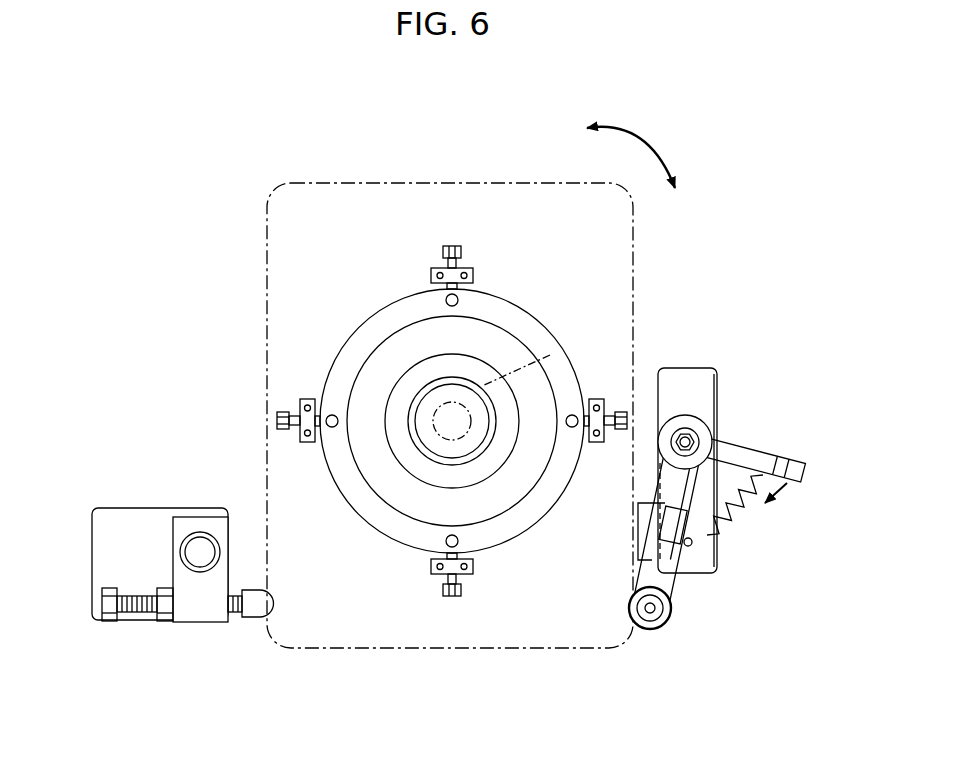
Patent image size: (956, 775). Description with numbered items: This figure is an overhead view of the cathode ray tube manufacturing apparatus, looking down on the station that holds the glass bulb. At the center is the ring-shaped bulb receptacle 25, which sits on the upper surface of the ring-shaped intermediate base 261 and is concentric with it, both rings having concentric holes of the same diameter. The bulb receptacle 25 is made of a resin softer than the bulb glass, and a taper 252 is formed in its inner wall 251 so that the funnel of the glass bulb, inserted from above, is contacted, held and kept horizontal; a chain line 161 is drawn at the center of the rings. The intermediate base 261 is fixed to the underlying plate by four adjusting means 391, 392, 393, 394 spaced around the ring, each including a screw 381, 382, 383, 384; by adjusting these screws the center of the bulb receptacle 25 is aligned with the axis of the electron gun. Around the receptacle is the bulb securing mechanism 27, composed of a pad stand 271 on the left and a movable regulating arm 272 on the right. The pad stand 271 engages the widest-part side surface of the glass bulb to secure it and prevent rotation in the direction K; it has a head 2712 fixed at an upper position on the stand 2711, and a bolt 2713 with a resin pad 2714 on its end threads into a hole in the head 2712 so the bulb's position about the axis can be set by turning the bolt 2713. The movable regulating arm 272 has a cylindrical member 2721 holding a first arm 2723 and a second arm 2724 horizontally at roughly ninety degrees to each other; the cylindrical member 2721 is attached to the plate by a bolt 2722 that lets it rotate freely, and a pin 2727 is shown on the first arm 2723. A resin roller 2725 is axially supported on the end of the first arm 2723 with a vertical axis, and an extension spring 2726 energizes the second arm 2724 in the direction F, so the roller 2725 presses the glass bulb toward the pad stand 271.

The bulb receptacle 25 is at (485, 460).
The inner wall 251 is at (462, 400).
The taper 252 is at (440, 395).
The intermediate base 261 is at (507, 340).
The axis line 161 is at (552, 354).
The bulb securing mechanism 27 is at (63, 463).
The pad stand 271 is at (108, 551).
The stand 2711 is at (105, 573).
The head 2712 is at (193, 623).
The bolt 2713 is at (130, 613).
The resin pad 2714 is at (265, 618).
The movable regulating arm 272 is at (749, 421).
The cylindrical member 2721 is at (700, 442).
The bolt 2722 is at (700, 435).
The first arm 2723 is at (720, 517).
The second arm 2724 is at (807, 470).
The roller 2725 is at (653, 634).
The extension spring 2726 is at (743, 500).
The pin 2727 is at (693, 544).
The screw 381 is at (277, 419).
The screw 382 is at (449, 246).
The screw 383 is at (626, 412).
The screw 384 is at (447, 597).
The adjusting means 391 is at (296, 397).
The adjusting means 392 is at (436, 266).
The adjusting means 393 is at (597, 397).
The adjusting means 394 is at (469, 576).
The direction K is at (640, 140).
The direction F is at (781, 499).